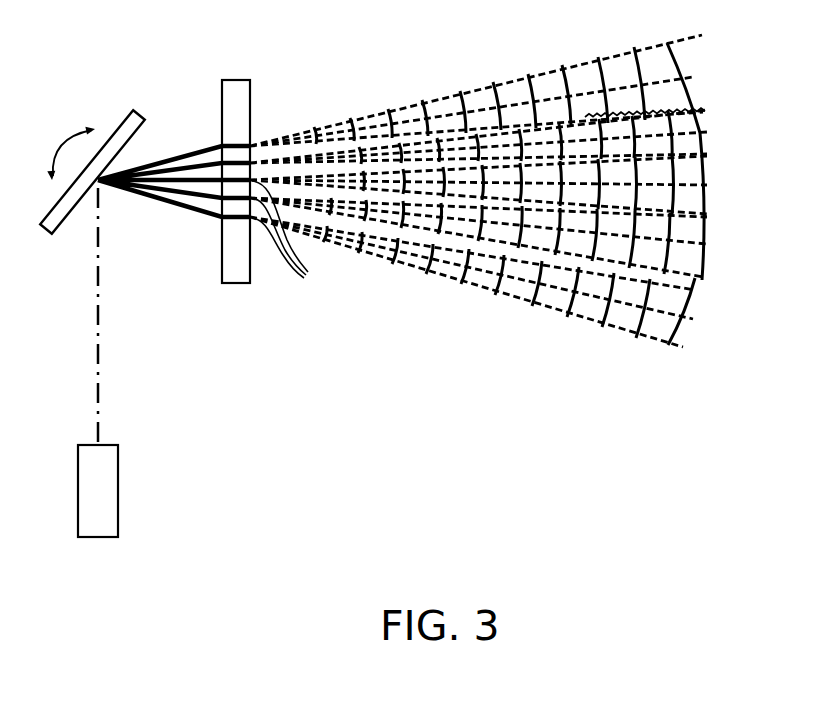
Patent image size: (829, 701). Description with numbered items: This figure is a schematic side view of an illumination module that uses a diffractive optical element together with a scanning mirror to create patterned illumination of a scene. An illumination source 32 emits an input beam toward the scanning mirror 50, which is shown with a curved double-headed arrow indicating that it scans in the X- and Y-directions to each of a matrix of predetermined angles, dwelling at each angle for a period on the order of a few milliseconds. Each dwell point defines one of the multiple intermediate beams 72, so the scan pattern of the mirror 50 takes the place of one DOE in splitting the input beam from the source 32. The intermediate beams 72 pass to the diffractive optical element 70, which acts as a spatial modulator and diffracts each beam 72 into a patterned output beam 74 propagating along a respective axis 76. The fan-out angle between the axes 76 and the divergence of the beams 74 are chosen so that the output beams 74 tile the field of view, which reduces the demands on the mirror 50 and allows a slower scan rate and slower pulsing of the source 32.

The illumination source 32 is at (118, 479).
The scanning mirror 50 is at (62, 229).
The diffractive optical element 70 is at (239, 284).
The intermediate beams 72 is at (478, 191).
The patterned output beams 74 is at (415, 142).
The axis 76 is at (700, 135).